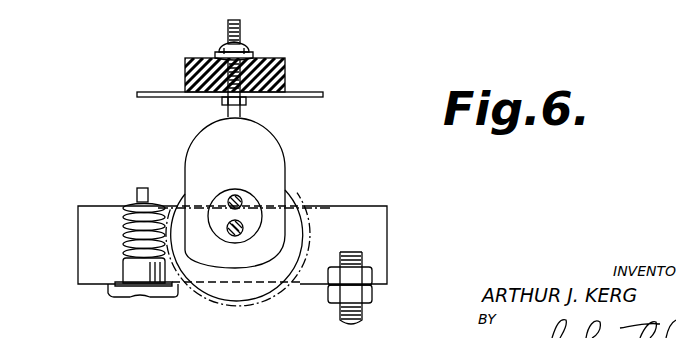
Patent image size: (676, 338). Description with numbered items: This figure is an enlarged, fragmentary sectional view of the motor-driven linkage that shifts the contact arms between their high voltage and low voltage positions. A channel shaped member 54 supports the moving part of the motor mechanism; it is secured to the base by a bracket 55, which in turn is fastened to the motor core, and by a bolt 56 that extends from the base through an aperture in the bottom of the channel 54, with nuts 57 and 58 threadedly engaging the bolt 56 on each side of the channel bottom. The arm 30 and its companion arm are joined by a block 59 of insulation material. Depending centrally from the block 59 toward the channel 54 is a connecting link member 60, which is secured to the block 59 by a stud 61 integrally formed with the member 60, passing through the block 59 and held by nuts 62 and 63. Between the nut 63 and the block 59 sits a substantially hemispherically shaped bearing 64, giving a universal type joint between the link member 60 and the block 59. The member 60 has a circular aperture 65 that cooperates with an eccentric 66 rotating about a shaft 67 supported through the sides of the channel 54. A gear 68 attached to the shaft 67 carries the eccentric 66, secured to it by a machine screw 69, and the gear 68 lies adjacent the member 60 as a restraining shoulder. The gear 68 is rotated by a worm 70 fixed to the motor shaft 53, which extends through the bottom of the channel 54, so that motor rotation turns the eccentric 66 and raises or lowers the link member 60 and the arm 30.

The arm 30 is at (320, 92).
The shaft 53 is at (139, 193).
The channel shaped member 54 is at (380, 220).
The bracket 55 is at (137, 292).
The bolt 56 is at (356, 315).
The nut 57 is at (373, 274).
The nut 58 is at (372, 296).
The block of insulation material 59 is at (284, 68).
The connecting link member 60 is at (258, 134).
The stud 61 is at (241, 28).
The nut 62 is at (250, 48).
The nut 63 is at (247, 101).
The hemispherically shaped bearing 64 is at (222, 56).
The circular aperture 65 is at (247, 196).
The eccentric 66 is at (252, 212).
The shaft 67 is at (235, 236).
The gear 68 is at (178, 191).
The machine screw 69 is at (235, 195).
The worm 70 is at (128, 228).